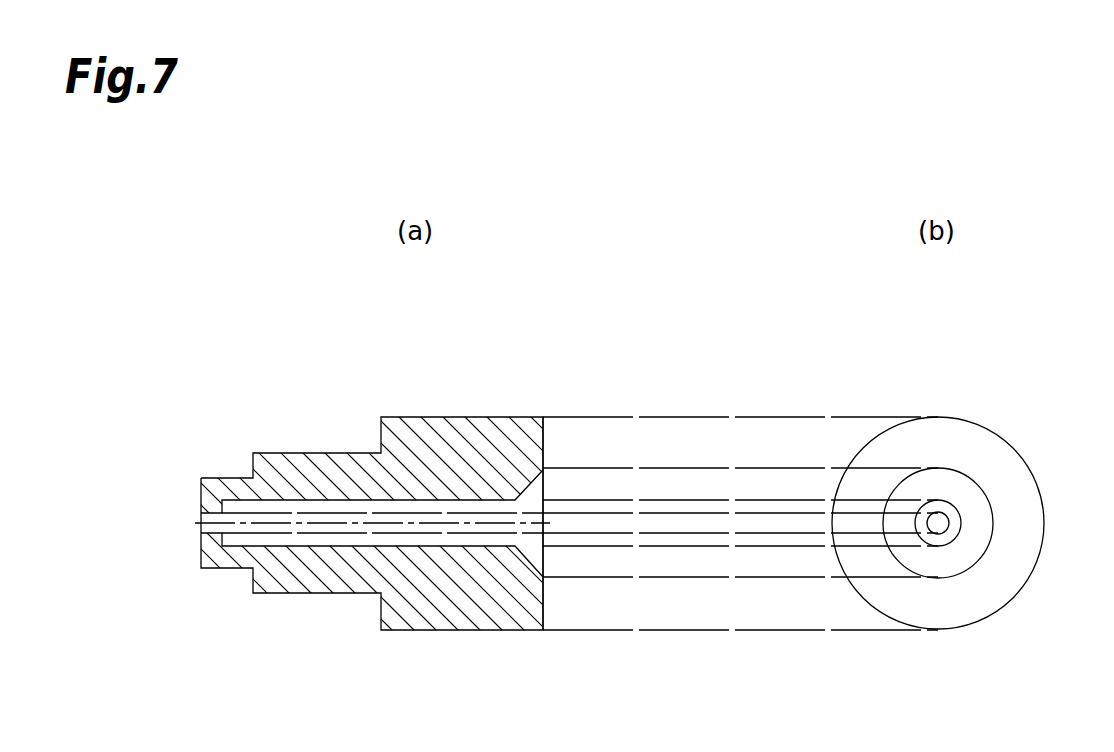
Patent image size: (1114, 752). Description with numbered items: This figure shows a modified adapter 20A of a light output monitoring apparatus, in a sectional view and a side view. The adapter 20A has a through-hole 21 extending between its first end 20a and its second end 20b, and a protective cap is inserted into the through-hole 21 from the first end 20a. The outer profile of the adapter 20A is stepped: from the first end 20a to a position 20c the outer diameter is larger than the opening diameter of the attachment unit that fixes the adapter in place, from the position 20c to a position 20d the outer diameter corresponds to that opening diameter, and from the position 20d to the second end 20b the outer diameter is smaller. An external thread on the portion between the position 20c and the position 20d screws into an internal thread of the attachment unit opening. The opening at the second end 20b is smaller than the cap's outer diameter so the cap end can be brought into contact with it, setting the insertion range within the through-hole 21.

The adapter 20A is at (627, 322).
The first end 20a is at (543, 631).
The second end 20b is at (203, 569).
The position 20c is at (382, 631).
The position 20d is at (253, 594).
The through-hole 21 is at (422, 500).